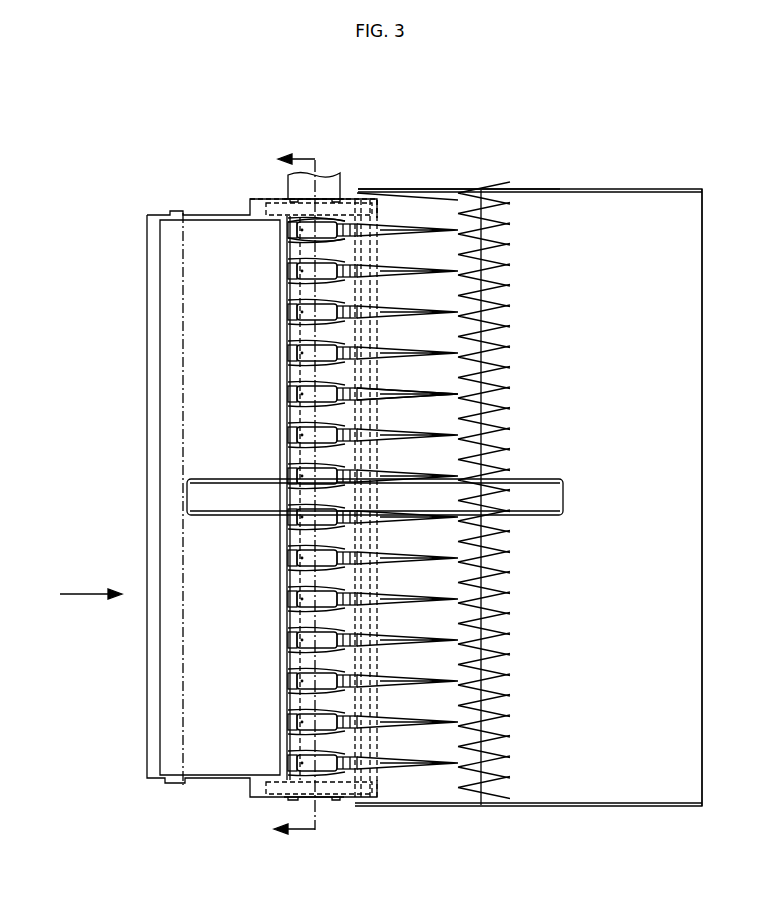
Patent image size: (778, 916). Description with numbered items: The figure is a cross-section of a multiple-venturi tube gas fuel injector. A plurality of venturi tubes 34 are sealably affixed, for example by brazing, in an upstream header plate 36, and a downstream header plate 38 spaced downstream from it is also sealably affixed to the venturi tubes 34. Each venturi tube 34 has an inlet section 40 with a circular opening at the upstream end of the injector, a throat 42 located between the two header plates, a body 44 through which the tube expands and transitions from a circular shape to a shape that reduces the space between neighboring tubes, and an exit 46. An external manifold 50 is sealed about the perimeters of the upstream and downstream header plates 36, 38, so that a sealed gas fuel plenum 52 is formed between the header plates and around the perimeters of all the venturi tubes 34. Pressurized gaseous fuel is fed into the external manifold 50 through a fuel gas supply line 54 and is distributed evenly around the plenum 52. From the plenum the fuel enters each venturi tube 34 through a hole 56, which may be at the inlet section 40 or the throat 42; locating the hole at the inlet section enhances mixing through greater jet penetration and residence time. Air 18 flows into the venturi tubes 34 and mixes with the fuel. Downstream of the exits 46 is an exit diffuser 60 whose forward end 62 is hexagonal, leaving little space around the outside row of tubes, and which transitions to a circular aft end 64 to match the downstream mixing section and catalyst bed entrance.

The air 18 is at (87, 596).
The venturi tube 34 is at (410, 745).
The upstream header plate 36 is at (284, 698).
The downstream header plate 38 is at (365, 703).
The inlet section 40 is at (297, 411).
The throat 42 is at (322, 415).
The body 44 is at (437, 410).
The exit 46 is at (522, 437).
The external manifold 50 is at (360, 199).
The gas fuel plenum 52 is at (328, 797).
The fuel gas supply line 54 is at (324, 184).
The hole 56 is at (312, 253).
The exit diffuser 60 is at (596, 188).
The forward end 62 is at (428, 187).
The aft end 64 is at (683, 187).